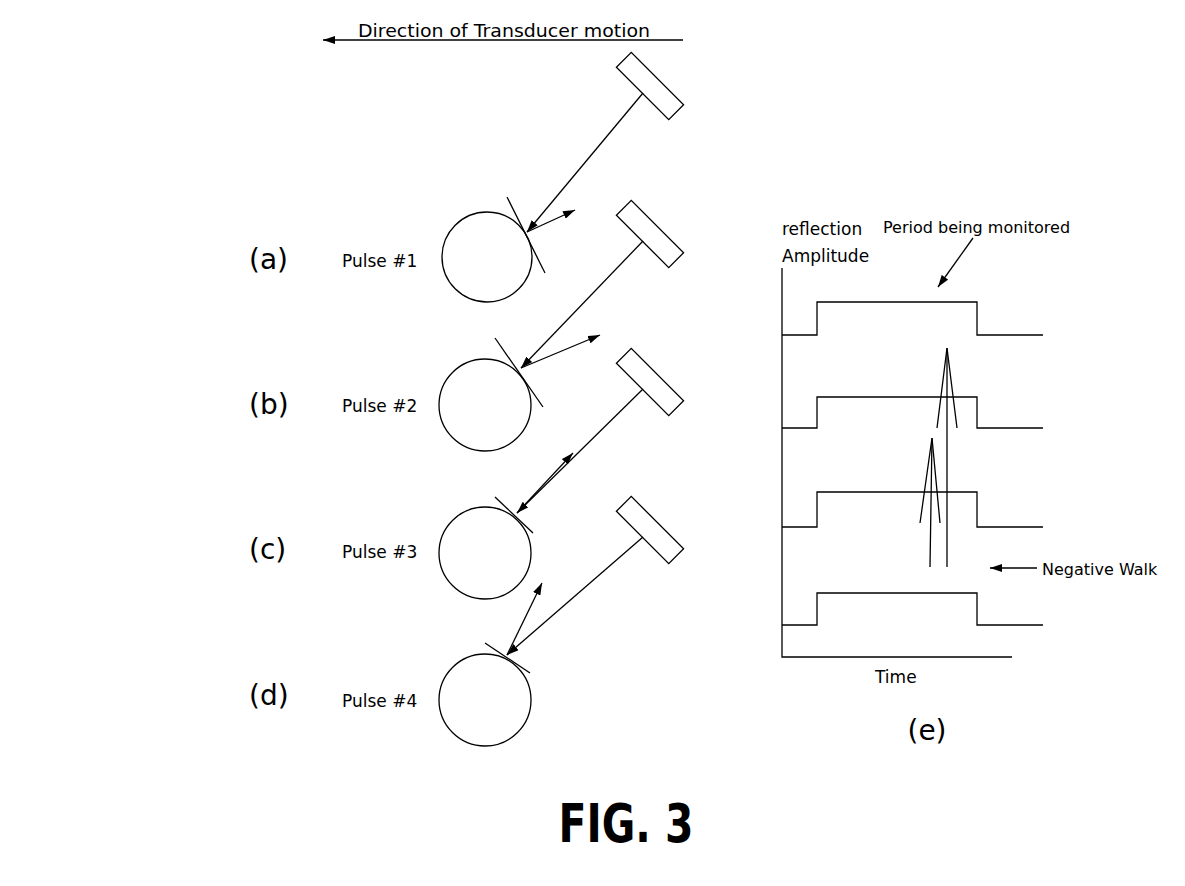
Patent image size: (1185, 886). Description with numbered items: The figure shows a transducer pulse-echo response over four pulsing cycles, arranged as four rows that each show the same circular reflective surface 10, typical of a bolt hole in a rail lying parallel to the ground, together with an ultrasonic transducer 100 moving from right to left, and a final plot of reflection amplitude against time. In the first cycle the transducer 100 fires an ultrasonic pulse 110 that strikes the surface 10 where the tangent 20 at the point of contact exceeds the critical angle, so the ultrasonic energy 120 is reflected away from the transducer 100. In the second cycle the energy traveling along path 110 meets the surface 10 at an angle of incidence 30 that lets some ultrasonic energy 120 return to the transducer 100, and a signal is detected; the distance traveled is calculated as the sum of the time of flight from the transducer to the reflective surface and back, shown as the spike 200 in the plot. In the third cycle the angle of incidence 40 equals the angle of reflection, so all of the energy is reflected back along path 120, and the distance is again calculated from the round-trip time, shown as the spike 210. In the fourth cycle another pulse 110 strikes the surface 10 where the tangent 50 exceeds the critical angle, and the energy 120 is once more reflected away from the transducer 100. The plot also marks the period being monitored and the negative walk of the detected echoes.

The circular reflective surface 10 is at (485, 479).
The tangent 20 is at (519, 223).
The angle of incidence 30 is at (510, 363).
The angle of incidence 40 is at (503, 509).
The tangent 50 is at (491, 652).
The ultrasonic transducer 100 is at (649, 307).
The ultrasonic pulse 110 is at (575, 374).
The ultrasonic energy 120 is at (571, 423).
The time of flight signal 200 is at (945, 447).
The time of flight signal 210 is at (916, 496).